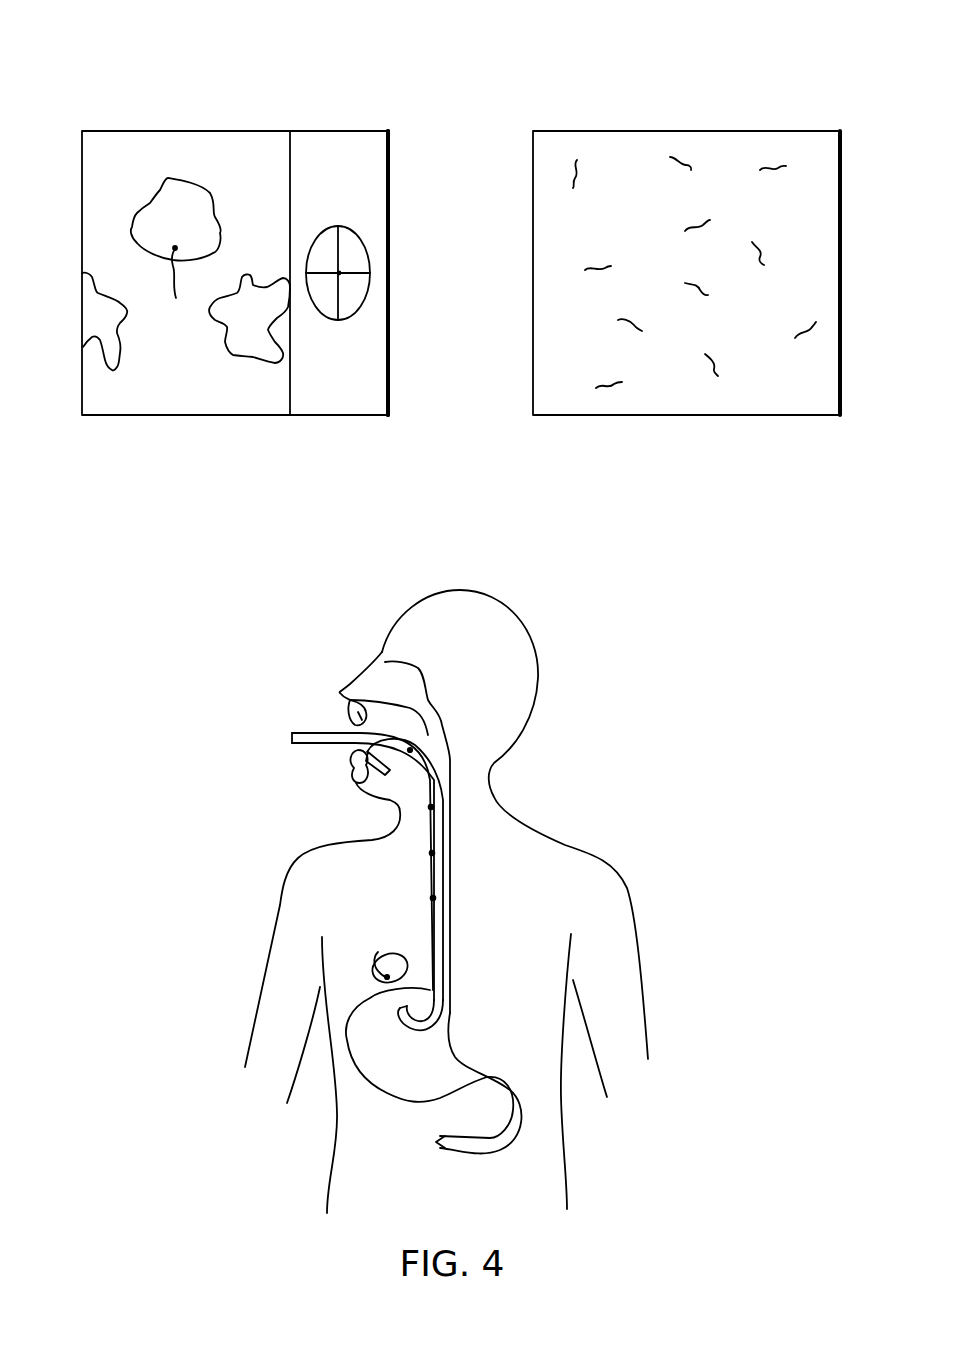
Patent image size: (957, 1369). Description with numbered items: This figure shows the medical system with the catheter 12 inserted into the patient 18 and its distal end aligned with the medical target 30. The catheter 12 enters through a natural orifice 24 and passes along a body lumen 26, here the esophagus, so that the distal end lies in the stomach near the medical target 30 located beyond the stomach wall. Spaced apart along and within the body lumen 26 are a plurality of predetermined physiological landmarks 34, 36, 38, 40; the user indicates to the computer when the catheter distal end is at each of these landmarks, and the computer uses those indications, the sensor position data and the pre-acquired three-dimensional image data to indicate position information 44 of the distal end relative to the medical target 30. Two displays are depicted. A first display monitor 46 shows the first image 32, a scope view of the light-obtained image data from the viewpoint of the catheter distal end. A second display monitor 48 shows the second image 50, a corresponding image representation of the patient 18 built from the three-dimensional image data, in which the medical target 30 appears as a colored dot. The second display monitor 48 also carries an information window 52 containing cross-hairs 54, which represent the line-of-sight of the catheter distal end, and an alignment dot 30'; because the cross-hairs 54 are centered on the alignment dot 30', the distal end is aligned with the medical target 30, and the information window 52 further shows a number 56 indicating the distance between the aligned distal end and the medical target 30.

The catheter 12 is at (305, 733).
The patient 18 is at (560, 753).
The natural orifice 24 is at (335, 751).
The body lumen 26 is at (462, 875).
The medical target 30 is at (287, 616).
The alignment dot 30' is at (388, 297).
The first image 32 is at (840, 227).
The predetermined physiological landmark 34 is at (412, 750).
The predetermined physiological landmark 36 is at (431, 807).
The predetermined physiological landmark 38 is at (432, 853).
The predetermined physiological landmark 40 is at (433, 898).
The position information 44 is at (321, 141).
The first display monitor 46 is at (667, 117).
The second display monitor 48 is at (189, 117).
The second image 50 is at (92, 247).
The information window 52 is at (380, 131).
The cross-hairs 54 is at (340, 237).
The number 56 is at (355, 354).